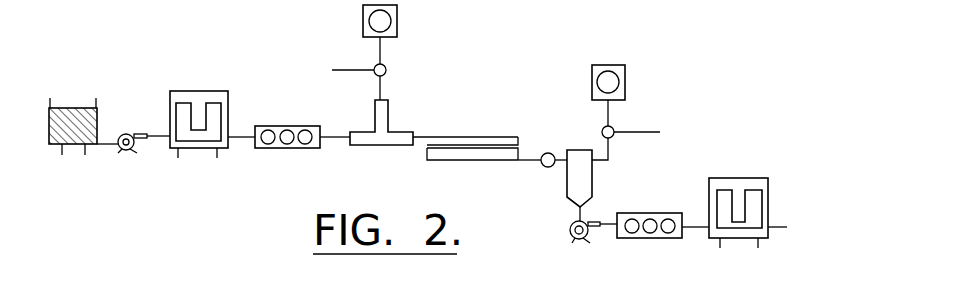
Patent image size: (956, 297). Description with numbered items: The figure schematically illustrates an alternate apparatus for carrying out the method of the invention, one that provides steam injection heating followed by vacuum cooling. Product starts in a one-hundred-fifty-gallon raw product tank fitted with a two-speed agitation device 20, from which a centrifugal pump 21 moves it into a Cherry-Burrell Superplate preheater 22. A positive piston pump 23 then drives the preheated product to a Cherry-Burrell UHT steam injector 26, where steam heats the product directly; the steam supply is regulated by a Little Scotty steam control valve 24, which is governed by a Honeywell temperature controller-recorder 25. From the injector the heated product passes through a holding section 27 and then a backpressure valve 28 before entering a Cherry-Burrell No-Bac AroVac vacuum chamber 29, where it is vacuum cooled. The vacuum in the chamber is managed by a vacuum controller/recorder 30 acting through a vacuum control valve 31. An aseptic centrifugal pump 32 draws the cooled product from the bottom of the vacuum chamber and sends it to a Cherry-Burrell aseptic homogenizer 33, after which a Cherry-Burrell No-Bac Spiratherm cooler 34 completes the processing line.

The two-speed agitation device 20 is at (101, 99).
The centrifugal pump 21 is at (148, 107).
The Superplate preheater 22 is at (207, 92).
The positive piston pump 23 is at (274, 104).
The steam control valve 24 is at (393, 45).
The temperature controller-recorder 25 is at (347, 29).
The steam injector 26 is at (402, 102).
The holding section 27 is at (497, 126).
The backpressure valve 28 is at (530, 175).
The vacuum chamber 29 is at (617, 178).
The vacuum controller/recorder 30 is at (624, 55).
The vacuum control valve 31 is at (602, 117).
The aseptic centrifugal pump 32 is at (601, 251).
The aseptic homogenizer 33 is at (674, 178).
The Spiratherm cooler 34 is at (734, 229).